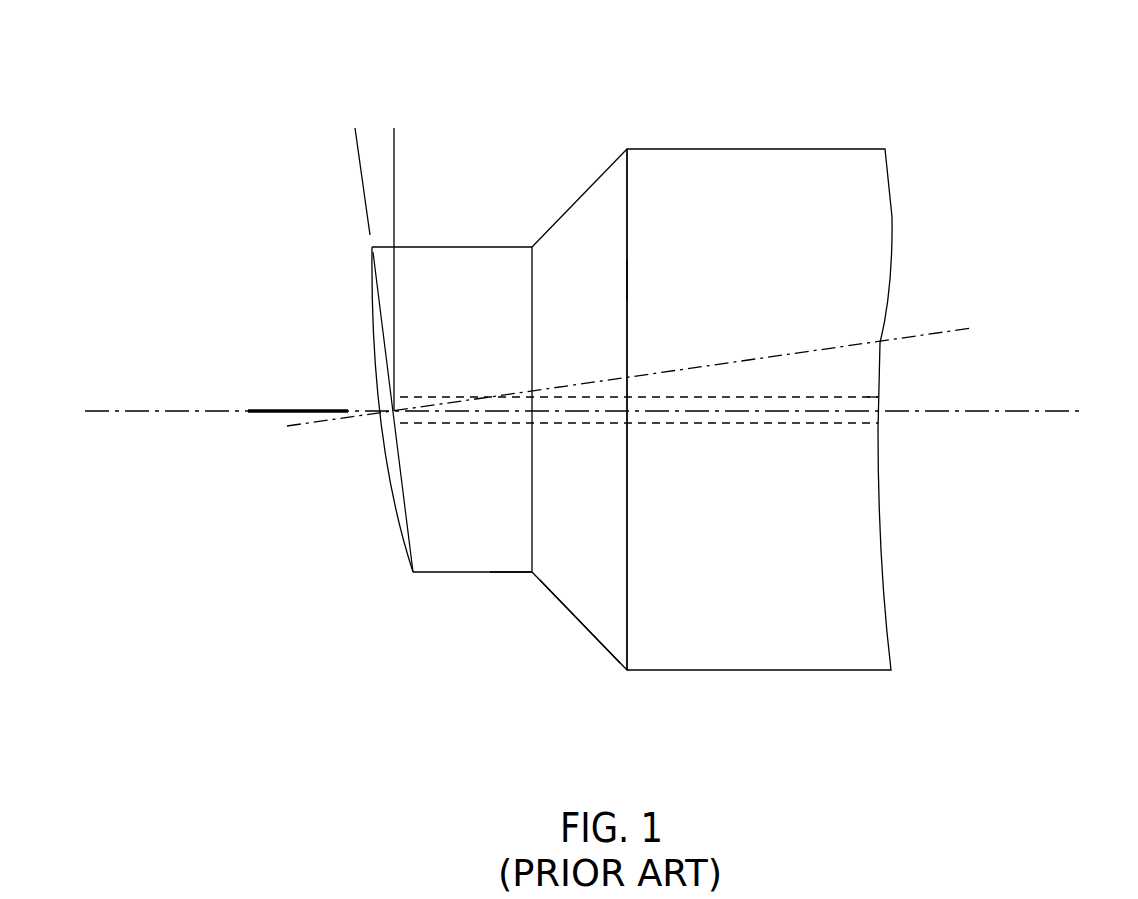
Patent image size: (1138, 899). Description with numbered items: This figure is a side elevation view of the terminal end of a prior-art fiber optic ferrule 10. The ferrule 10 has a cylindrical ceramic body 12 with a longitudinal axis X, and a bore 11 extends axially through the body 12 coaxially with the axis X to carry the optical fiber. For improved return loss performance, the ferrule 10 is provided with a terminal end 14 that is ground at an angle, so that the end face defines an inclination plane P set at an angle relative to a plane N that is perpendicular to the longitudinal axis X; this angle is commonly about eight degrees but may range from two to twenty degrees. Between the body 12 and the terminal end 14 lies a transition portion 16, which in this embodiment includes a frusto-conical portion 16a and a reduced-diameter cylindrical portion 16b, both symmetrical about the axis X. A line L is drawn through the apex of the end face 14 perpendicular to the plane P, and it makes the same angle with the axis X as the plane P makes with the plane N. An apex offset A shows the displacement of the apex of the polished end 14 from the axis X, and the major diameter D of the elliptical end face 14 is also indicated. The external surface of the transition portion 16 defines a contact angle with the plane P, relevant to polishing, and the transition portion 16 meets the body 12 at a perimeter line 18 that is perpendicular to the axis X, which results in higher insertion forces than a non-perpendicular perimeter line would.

The ferrule 10 is at (838, 128).
The bore 11 is at (695, 423).
The cylindrical ceramic body 12 is at (765, 167).
The terminal end 14 is at (393, 498).
The transition portion 16 is at (539, 599).
The frusto-conical portion 16a is at (590, 635).
The reduced diameter cylindrical portion 16b is at (509, 574).
The perimeter line 18 is at (628, 297).
The longitudinal axis X is at (577, 418).
The line through apex L is at (725, 360).
The inclination plane P is at (363, 206).
The perpendicular plane N is at (395, 205).
The major diameter D is at (356, 248).
The apex offset A is at (275, 467).